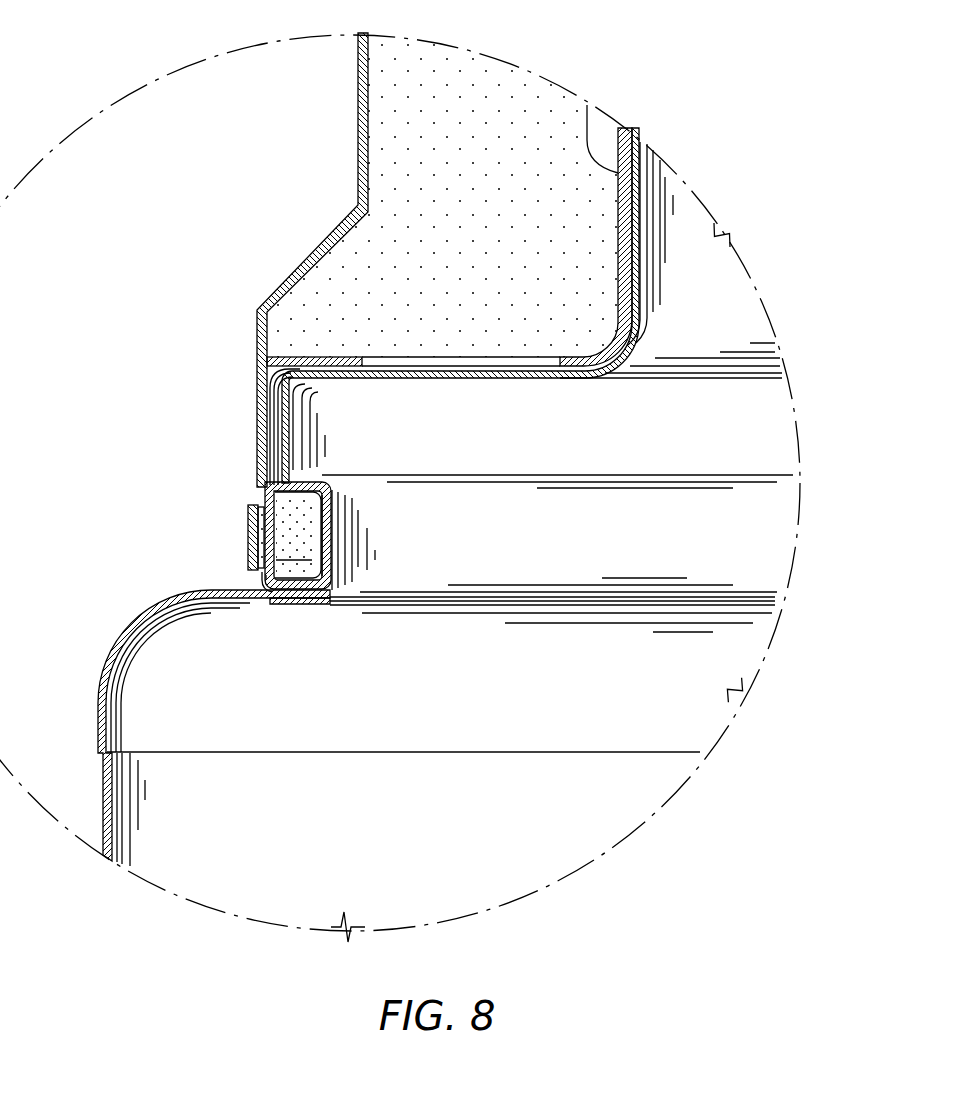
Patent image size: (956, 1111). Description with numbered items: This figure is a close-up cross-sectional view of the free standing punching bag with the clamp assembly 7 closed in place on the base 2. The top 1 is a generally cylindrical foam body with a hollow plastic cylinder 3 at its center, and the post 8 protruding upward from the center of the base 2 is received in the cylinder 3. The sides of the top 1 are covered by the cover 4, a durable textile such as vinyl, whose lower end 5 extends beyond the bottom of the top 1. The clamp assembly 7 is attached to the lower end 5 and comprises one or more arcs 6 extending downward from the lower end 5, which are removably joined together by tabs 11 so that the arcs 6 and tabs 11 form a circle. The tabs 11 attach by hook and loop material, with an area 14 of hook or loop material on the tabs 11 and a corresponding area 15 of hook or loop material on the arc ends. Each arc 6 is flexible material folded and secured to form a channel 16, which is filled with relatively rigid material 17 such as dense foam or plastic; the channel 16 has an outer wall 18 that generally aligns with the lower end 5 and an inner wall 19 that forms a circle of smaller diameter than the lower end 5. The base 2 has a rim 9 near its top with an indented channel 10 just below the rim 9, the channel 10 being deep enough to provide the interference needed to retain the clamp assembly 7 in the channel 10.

The top 1 is at (415, 128).
The base 2 is at (162, 710).
The hollow cylinder 3 is at (618, 173).
The cover 4 is at (322, 262).
The lower end 5 is at (257, 405).
The arc 6 is at (267, 495).
The clamp assembly 7 is at (289, 602).
The post 8 is at (710, 285).
The rim 9 is at (750, 430).
The indented channel 10 is at (752, 536).
The tab 11 is at (265, 523).
The area of hook or loop material 14 is at (263, 572).
The area of hook or loop material 15 is at (266, 580).
The channel 16 is at (302, 585).
The relatively rigid material 17 is at (292, 556).
The outer wall 18 is at (290, 525).
The inner wall 19 is at (295, 550).